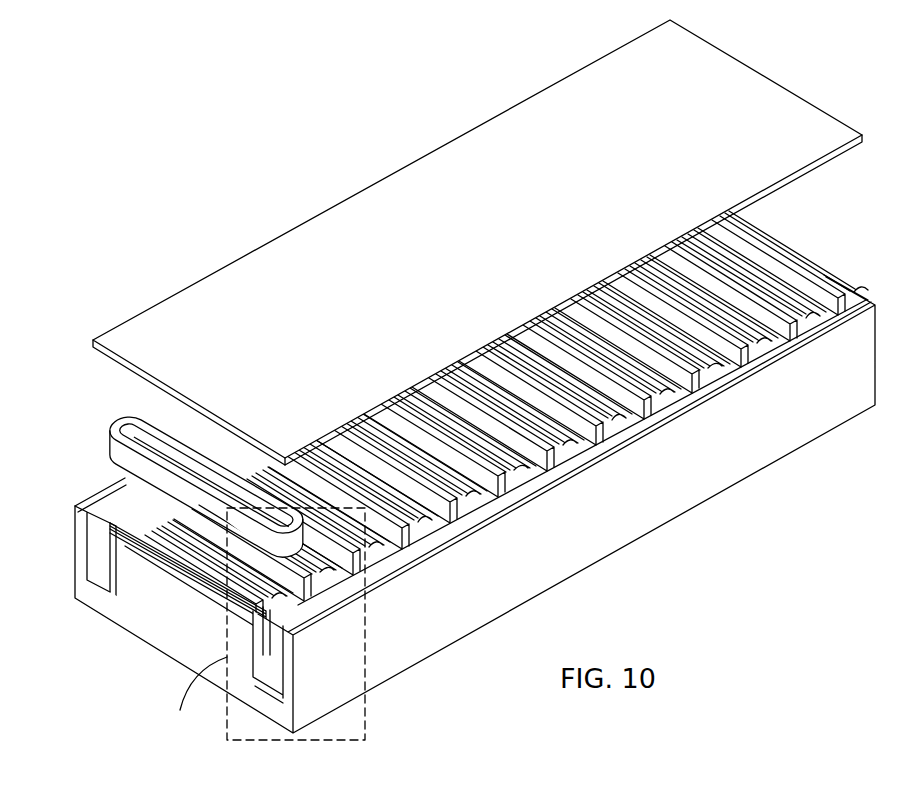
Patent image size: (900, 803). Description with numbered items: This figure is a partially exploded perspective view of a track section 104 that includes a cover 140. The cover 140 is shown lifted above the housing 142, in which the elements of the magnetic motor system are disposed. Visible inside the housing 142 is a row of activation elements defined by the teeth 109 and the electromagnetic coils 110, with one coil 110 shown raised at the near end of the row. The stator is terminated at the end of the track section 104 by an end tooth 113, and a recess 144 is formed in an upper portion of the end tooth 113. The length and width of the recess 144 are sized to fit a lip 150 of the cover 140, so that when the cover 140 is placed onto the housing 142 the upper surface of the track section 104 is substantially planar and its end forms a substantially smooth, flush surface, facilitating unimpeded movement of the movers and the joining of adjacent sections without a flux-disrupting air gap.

The track section 104 is at (453, 380).
The teeth 109 is at (768, 272).
The electromagnetic coils 110 is at (830, 297).
The end tooth 113 is at (157, 562).
The cover 140 is at (753, 95).
The housing 142 is at (843, 407).
The recess 144 is at (117, 535).
The lip 150 is at (96, 352).